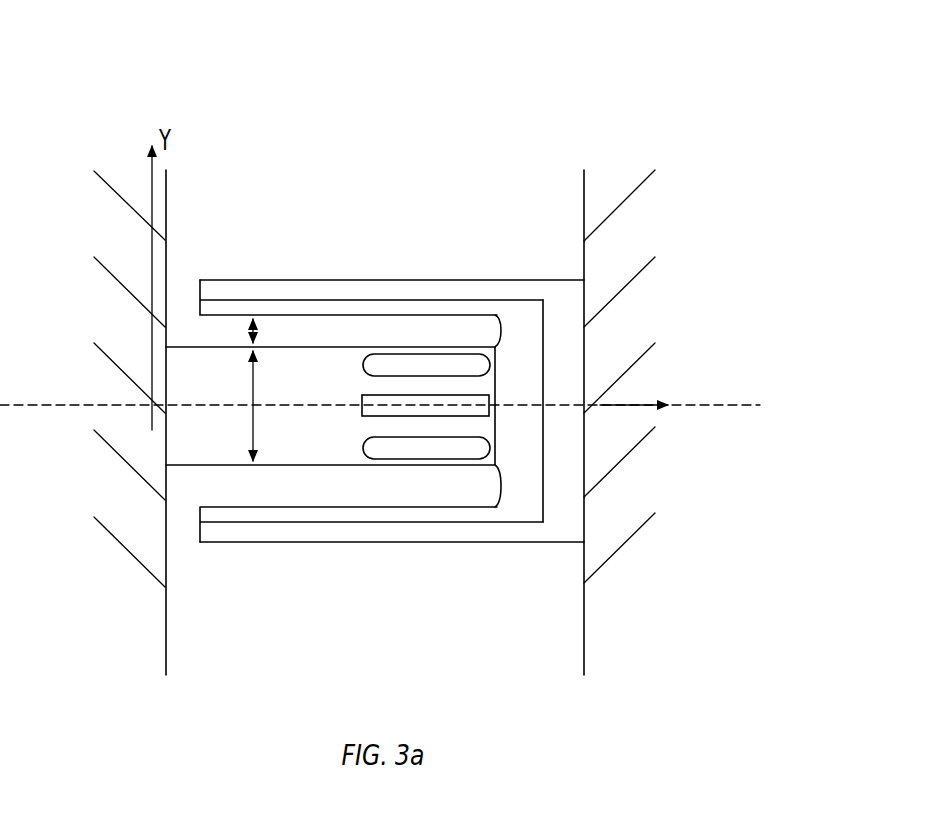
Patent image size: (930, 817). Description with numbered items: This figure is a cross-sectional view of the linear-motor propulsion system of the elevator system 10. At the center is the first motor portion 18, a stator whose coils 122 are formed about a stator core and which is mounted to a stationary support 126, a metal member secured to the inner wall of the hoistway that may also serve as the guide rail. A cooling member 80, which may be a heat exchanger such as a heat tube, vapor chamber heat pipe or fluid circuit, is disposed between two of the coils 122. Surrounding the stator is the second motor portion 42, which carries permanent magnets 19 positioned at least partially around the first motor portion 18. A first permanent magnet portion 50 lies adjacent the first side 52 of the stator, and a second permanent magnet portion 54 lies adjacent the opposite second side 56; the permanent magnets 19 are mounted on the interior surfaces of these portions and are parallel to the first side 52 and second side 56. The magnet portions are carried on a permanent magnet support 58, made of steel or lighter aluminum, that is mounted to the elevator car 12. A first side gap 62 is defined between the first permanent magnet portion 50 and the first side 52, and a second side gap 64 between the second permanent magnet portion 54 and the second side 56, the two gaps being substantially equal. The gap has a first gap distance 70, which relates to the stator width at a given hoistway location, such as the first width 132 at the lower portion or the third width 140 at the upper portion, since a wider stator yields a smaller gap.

The elevator system 10 is at (569, 78).
The elevator car 12 is at (645, 295).
The first motor portion 18 is at (489, 338).
The permanent magnets 19 is at (410, 305).
The second motor portion 42 is at (495, 276).
The first permanent magnet portion 50 is at (386, 276).
The first side 52 is at (427, 347).
The second permanent magnet portion 54 is at (339, 528).
The second side 56 is at (452, 467).
The permanent magnet support 58 is at (225, 290).
The first side gap 62 is at (499, 330).
The second side gap 64 is at (499, 487).
The first gap distance 70 is at (253, 315).
The cooling member 80 is at (490, 395).
The coils 122 is at (442, 358).
The stationary support 126 is at (104, 236).
The first width 132 is at (252, 397).
The third width 140 is at (250, 412).